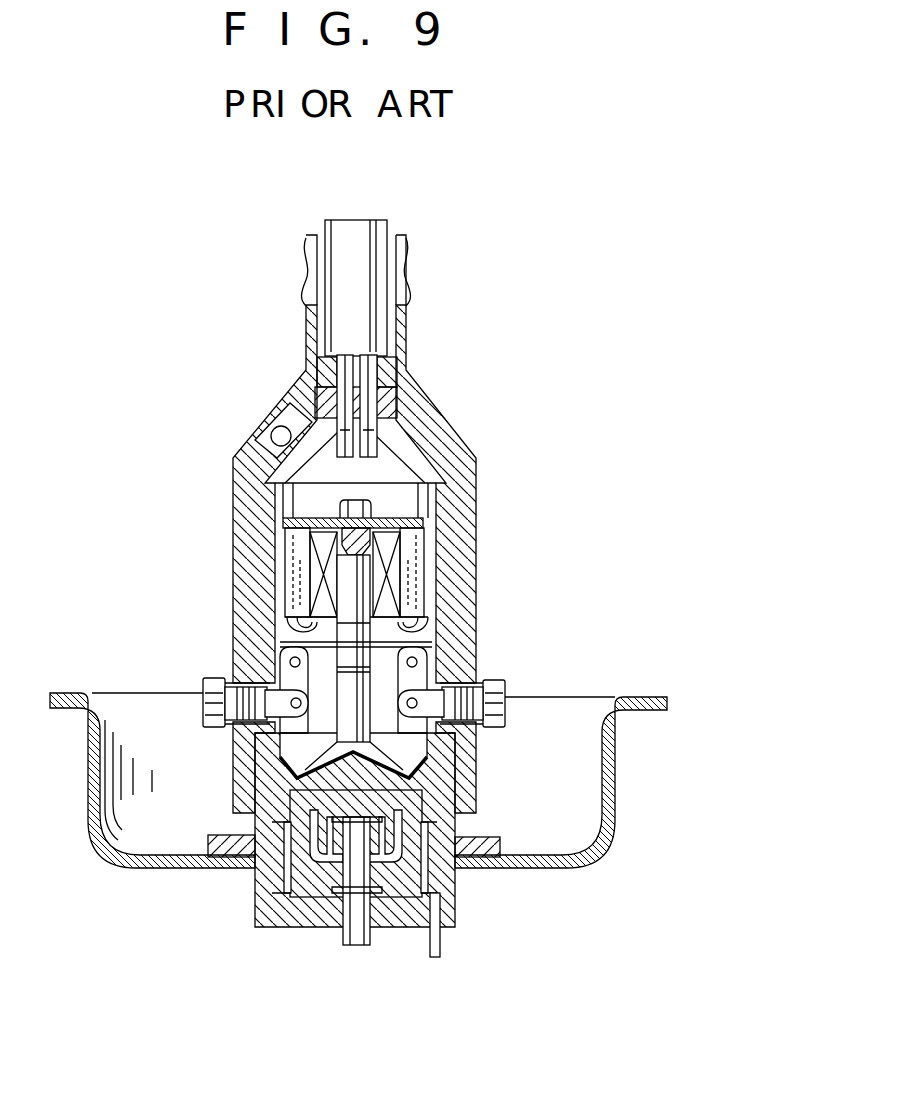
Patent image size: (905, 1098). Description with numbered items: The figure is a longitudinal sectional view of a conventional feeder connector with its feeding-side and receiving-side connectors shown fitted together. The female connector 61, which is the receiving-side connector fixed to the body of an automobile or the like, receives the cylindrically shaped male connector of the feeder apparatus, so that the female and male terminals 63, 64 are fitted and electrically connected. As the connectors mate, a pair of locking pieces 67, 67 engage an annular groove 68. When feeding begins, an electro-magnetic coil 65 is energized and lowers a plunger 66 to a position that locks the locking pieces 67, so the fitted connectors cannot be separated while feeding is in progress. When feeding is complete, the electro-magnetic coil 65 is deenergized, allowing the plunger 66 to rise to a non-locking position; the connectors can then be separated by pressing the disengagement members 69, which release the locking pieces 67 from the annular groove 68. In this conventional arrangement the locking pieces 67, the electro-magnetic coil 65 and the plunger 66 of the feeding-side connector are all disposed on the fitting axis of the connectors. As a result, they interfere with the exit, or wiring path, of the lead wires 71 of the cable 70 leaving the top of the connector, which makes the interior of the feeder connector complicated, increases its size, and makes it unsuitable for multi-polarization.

The female connector 61 is at (457, 827).
The female terminal 63 is at (317, 890).
The male terminal 64 is at (357, 940).
The electro-magnetic coil 65 is at (395, 568).
The plunger 66 is at (362, 688).
The locking pieces 67 is at (354, 764).
The annular groove 68 is at (430, 783).
The disengagement members 69 is at (472, 702).
The cable 70 is at (388, 228).
The lead wires 71 is at (373, 448).